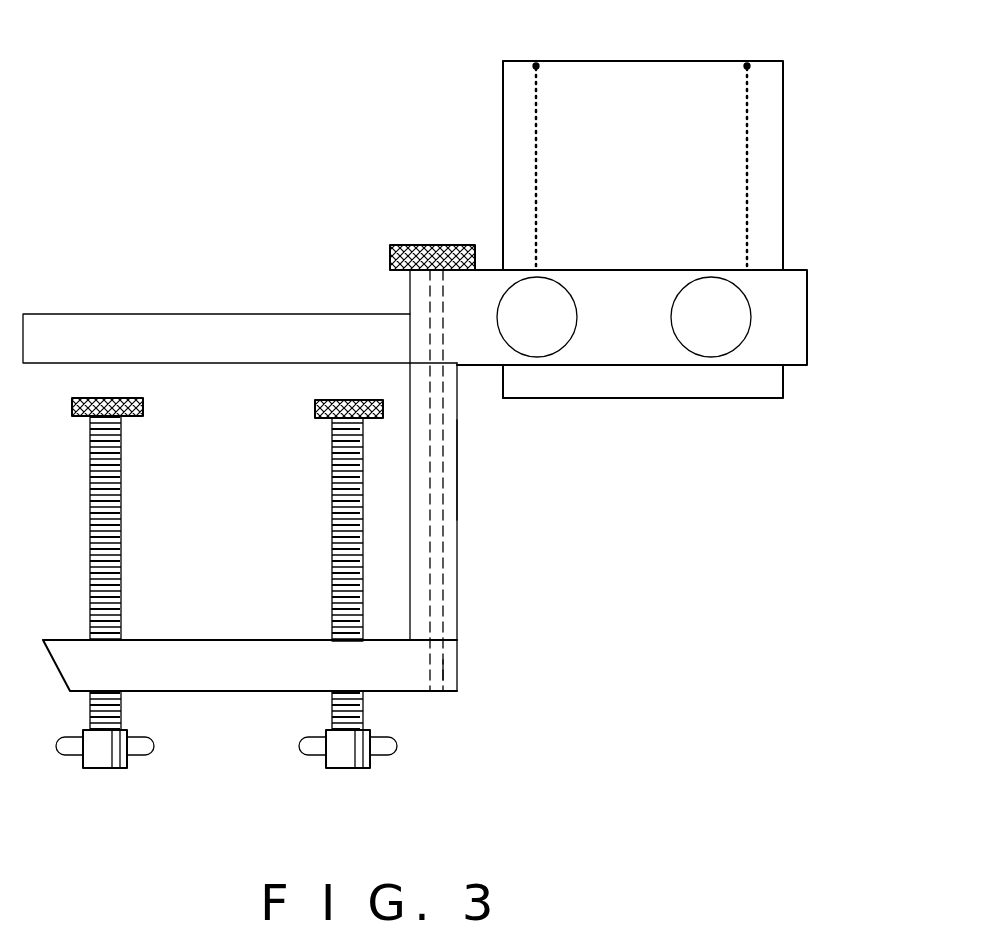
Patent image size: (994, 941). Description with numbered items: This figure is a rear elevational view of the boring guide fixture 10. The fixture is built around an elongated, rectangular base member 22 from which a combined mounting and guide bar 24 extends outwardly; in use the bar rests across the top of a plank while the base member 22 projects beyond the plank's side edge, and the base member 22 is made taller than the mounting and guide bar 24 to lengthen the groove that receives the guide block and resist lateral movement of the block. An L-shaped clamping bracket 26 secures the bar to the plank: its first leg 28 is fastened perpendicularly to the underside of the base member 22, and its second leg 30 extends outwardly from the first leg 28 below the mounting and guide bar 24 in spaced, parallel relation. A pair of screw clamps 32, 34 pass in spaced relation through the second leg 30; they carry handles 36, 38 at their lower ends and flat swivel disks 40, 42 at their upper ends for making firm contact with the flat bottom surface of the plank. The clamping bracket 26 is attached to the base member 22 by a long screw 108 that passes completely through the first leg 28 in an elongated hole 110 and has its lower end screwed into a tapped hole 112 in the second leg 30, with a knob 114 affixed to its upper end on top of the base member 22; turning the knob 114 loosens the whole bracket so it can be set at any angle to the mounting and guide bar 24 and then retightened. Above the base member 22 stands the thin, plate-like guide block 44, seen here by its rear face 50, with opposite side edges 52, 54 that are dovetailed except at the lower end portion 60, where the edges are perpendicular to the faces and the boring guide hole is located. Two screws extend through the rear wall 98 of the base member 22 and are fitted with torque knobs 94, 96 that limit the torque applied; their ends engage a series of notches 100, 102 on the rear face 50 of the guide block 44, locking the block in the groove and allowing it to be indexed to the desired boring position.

The boring guide fixture 10 is at (303, 265).
The base member 22 is at (783, 310).
The mounting and guide bar 24 is at (110, 314).
The clamping bracket 26 is at (457, 543).
The first leg 28 is at (458, 470).
The second leg 30 is at (212, 691).
The screw clamp 32 is at (332, 512).
The screw clamp 34 is at (121, 527).
The handle 36 is at (397, 753).
The handle 38 is at (63, 755).
The flat swivel disk 40 is at (313, 409).
The flat swivel disk 42 is at (138, 416).
The guide block 44 is at (785, 142).
The rear face 50 is at (503, 110).
The side edge 52 is at (785, 390).
The side edge 54 is at (503, 378).
The lower end portion 60 is at (712, 398).
The torque knob 94 is at (711, 317).
The torque knob 96 is at (537, 317).
The rear wall 98 is at (630, 334).
The notch 100 is at (537, 157).
The notch 102 is at (747, 115).
The screw 108 is at (436, 582).
The elongated hole 110 is at (443, 610).
The tapped hole 112 is at (445, 670).
The knob 114 is at (420, 245).